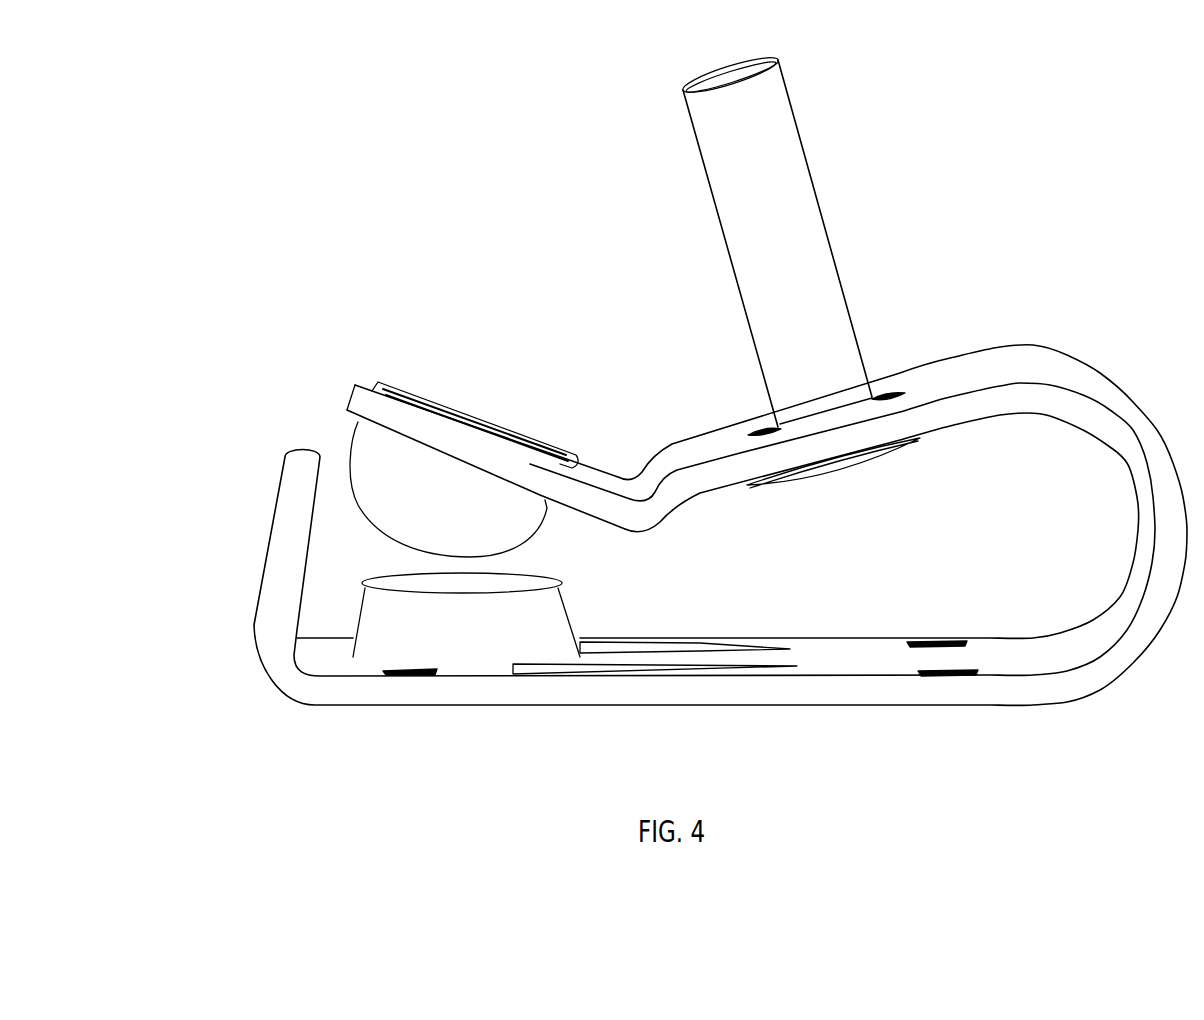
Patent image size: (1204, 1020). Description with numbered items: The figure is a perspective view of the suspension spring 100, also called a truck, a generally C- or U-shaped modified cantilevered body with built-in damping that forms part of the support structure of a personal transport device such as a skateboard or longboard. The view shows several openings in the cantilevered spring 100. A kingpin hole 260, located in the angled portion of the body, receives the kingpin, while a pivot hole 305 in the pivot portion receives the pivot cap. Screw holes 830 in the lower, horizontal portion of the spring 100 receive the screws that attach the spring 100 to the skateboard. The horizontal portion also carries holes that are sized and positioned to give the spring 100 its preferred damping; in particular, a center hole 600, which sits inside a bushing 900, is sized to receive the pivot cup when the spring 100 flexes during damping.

The suspension spring 100 is at (1115, 156).
The kingpin hole 260 is at (764, 420).
The pivot hole 305 is at (456, 420).
The center hole 600 is at (460, 586).
The screw holes 830 is at (940, 675).
The bushing 900 is at (432, 628).